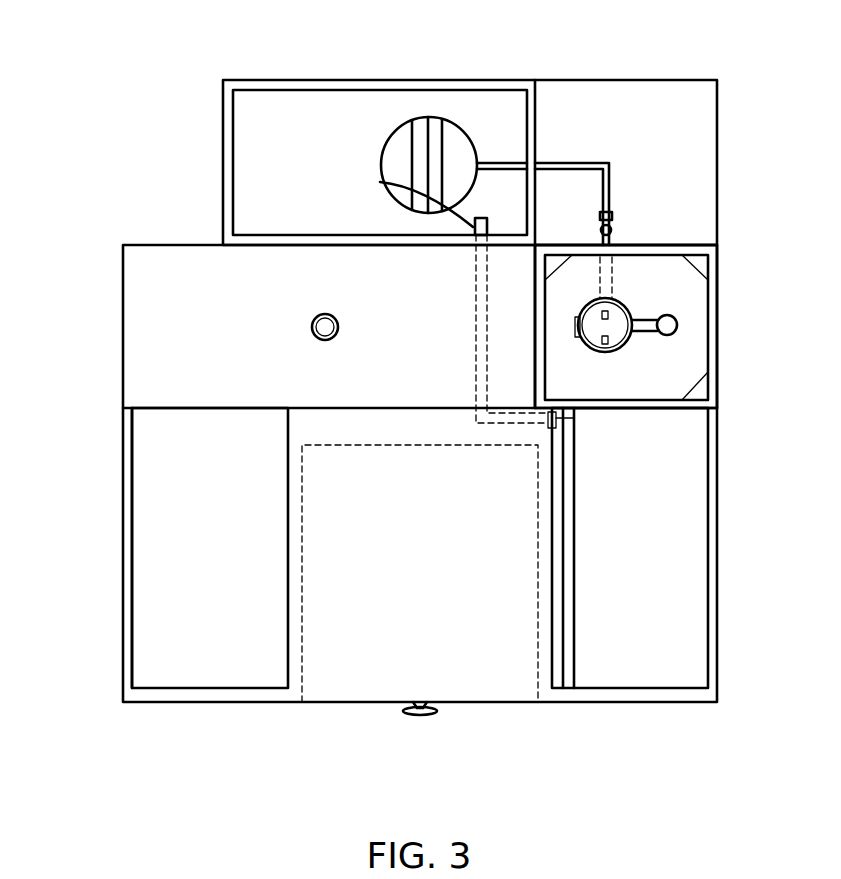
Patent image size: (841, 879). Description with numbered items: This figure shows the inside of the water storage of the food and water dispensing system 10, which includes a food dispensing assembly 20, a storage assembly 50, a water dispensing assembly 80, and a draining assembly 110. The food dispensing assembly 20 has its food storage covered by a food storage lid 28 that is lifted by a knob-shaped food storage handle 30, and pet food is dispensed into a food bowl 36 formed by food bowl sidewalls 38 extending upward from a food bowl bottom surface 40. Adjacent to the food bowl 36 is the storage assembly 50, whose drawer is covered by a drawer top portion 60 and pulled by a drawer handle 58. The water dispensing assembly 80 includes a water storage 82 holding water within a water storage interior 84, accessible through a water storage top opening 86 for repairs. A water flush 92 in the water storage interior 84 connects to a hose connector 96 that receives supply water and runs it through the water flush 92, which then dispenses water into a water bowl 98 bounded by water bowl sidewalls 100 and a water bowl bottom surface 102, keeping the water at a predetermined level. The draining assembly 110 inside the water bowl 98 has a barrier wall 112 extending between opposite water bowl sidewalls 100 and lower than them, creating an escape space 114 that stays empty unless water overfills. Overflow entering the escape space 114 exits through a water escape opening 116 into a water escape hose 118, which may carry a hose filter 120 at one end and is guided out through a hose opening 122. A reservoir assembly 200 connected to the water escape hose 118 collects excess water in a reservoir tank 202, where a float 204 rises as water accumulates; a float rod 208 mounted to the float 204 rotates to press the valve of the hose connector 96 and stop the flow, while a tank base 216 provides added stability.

The food and water dispensing system 10 is at (122, 168).
The food dispensing assembly 20 is at (122, 378).
The food storage lid 28 is at (148, 262).
The food storage handle 30 is at (325, 327).
The food bowl 36 is at (178, 702).
The food bowl sidewalls 38 is at (120, 495).
The food bowl bottom surface 40 is at (148, 545).
The storage assembly 50 is at (368, 704).
The drawer handle 58 is at (418, 718).
The drawer top portion 60 is at (322, 682).
The water dispensing assembly 80 is at (720, 368).
The water storage 82 is at (680, 245).
The water storage interior 84 is at (693, 325).
The water storage top opening 86 is at (627, 268).
The water flush 92 is at (615, 322).
The hose connector 96 is at (600, 238).
The water bowl 98 is at (718, 535).
The water bowl sidewalls 100 is at (709, 635).
The water bowl bottom surface 102 is at (683, 672).
The draining assembly 110 is at (556, 691).
The barrier wall 112 is at (570, 680).
The escape space 114 is at (563, 652).
The water escape opening 116 is at (575, 418).
The water escape hose 118 is at (398, 198).
The hose filter 120 is at (480, 208).
The hose opening 122 is at (470, 242).
The reservoir assembly 200 is at (221, 100).
The reservoir tank 202 is at (282, 80).
The float 204 is at (418, 125).
The float rod 208 is at (545, 163).
The tank base 216 is at (677, 105).